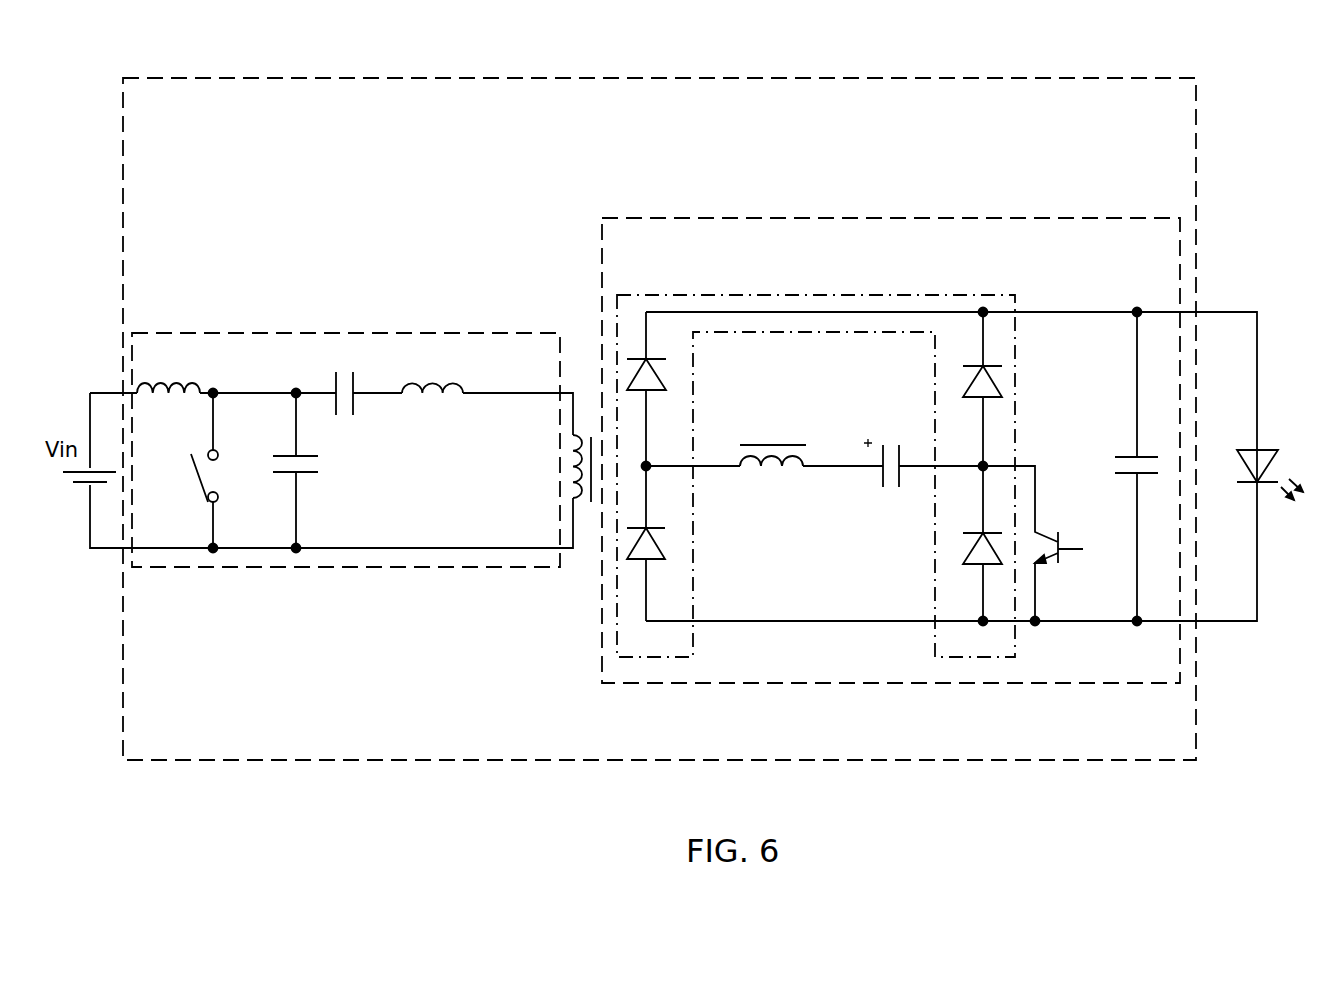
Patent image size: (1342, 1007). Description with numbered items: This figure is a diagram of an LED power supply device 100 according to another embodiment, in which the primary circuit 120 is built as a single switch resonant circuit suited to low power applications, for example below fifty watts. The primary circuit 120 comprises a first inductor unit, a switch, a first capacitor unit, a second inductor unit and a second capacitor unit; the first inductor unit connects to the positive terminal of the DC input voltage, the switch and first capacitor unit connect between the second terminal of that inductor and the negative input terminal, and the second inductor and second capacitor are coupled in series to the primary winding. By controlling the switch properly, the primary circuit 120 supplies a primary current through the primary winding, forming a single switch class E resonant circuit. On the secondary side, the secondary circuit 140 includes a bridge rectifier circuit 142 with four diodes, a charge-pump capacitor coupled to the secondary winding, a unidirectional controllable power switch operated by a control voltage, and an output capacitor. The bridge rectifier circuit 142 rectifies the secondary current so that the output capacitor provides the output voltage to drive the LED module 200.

The LED power supply device 100 is at (290, 760).
The primary circuit 120 is at (364, 333).
The secondary circuit 140 is at (835, 218).
The bridge rectifier circuit 142 is at (755, 295).
The LED module 200 is at (1262, 450).